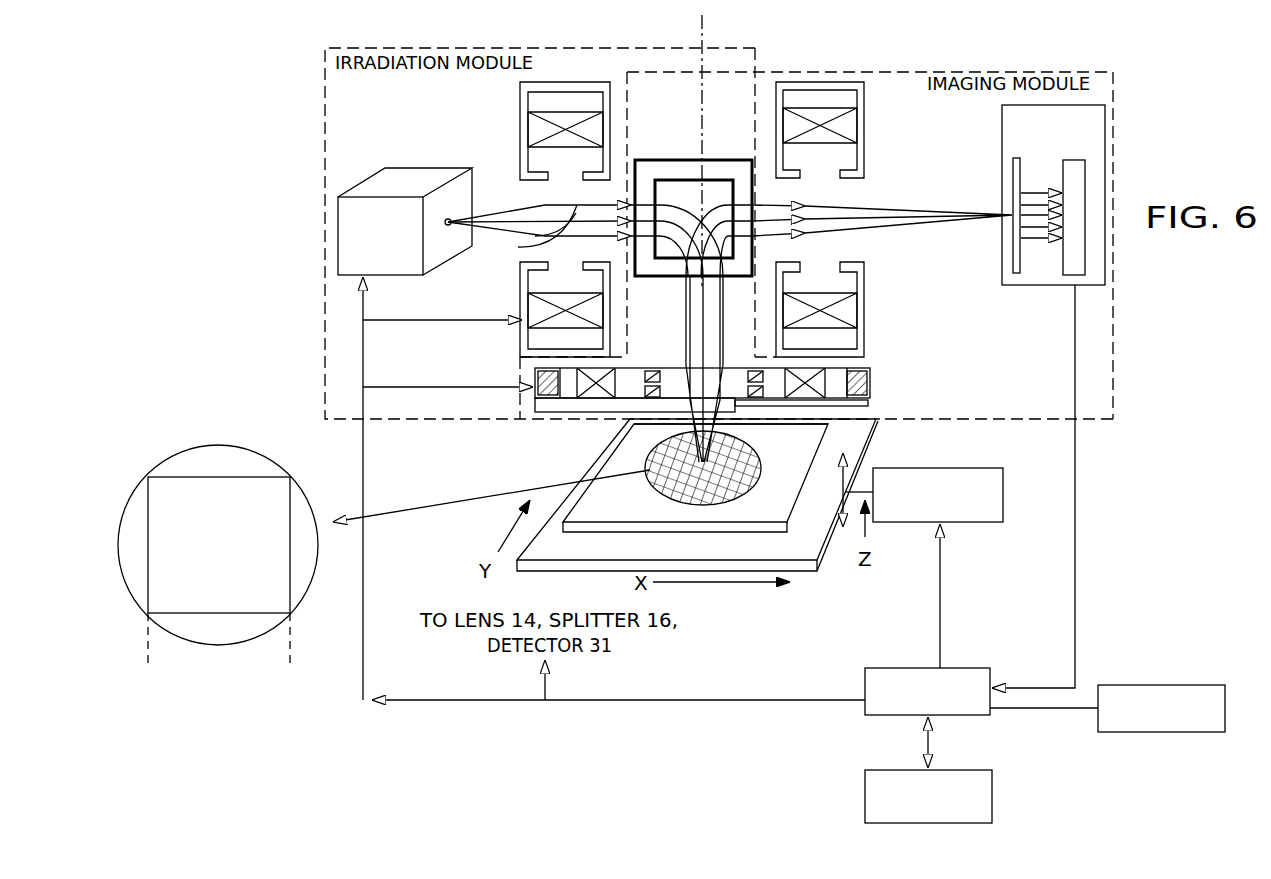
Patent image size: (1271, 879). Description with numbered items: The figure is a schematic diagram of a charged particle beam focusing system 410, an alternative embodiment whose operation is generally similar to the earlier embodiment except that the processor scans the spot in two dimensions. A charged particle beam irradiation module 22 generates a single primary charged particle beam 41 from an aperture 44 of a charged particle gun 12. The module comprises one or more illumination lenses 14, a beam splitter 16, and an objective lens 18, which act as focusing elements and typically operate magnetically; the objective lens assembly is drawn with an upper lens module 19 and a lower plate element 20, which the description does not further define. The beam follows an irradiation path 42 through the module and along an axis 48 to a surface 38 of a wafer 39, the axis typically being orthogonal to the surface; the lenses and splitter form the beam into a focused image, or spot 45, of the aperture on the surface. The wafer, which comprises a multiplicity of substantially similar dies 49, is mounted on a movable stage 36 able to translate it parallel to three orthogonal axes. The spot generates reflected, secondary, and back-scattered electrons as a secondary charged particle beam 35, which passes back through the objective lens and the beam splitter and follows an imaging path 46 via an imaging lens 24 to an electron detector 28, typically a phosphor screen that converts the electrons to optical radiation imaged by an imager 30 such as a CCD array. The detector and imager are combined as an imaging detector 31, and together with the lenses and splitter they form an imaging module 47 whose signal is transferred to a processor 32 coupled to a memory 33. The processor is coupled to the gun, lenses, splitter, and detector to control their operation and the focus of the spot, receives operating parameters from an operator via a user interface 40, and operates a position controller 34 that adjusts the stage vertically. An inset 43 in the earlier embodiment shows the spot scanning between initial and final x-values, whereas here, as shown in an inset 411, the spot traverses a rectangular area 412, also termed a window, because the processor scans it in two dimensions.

The charged particle gun 12 is at (403, 178).
The illumination lenses 14 is at (521, 93).
The beam splitter 16 is at (668, 160).
The objective lens 18 is at (535, 412).
The lens module 19 is at (868, 378).
The lens plate 20 is at (868, 403).
The charged particle beam irradiation module 22 is at (730, 48).
The imaging lens 24 is at (866, 93).
The electron detector 28 is at (1013, 262).
The imager 30 is at (1063, 270).
The imaging detector 31 is at (1000, 153).
The processor 32 is at (975, 668).
The memory 33 is at (1208, 685).
The position controller 34 is at (957, 522).
The secondary charged particle beam 35 is at (958, 228).
The movable stage 36 is at (878, 421).
The surface 38 is at (741, 498).
The wafer 39 is at (745, 498).
The user interface 40 is at (963, 768).
The primary charged particle beam 41 is at (497, 204).
The irradiation path 42 is at (535, 232).
The inset 43 is at (446, 268).
The aperture 44 is at (447, 219).
The focused image 45 is at (755, 436).
The imaging path 46 is at (775, 230).
The imaging module 47 is at (963, 420).
The axis 48 is at (700, 32).
The dies 49 is at (652, 460).
The charged particle beam focusing system 410 is at (488, 741).
The inset 411 is at (220, 445).
The rectangular area 412 is at (148, 537).